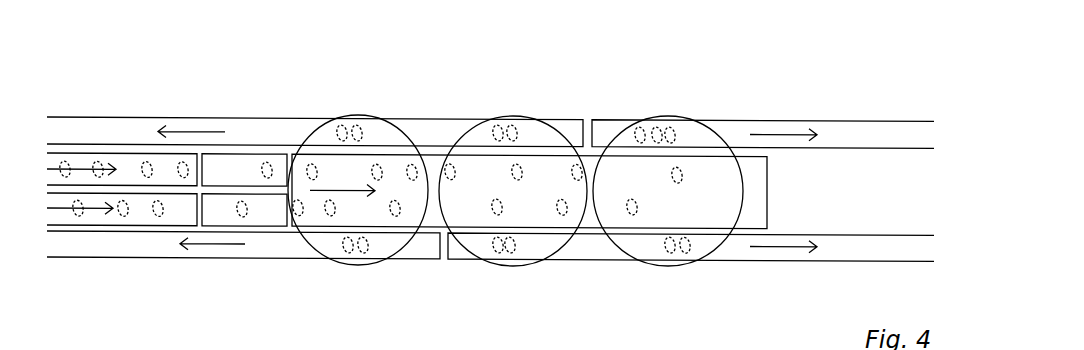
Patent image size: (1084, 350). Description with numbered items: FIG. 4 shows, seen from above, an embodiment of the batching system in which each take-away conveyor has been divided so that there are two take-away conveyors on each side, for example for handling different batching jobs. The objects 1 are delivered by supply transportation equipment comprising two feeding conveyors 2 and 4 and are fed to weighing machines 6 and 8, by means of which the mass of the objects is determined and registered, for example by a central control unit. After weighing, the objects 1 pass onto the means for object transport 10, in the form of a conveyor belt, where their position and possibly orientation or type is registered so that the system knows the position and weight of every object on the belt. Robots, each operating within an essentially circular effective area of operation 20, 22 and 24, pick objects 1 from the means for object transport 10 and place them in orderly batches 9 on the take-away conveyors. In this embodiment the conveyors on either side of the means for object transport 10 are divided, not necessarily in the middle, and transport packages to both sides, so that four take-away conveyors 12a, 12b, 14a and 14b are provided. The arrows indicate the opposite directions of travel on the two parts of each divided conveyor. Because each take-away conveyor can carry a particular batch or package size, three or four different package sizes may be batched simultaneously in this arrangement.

The objects 1 is at (150, 162).
The feeding conveyor 2 is at (115, 153).
The feeding conveyor 4 is at (120, 225).
The weighing machine 6 is at (230, 155).
The weighing machine 8 is at (215, 224).
The batches 9 is at (708, 252).
The means for object transport 10 is at (433, 155).
The take-away conveyor 12a is at (567, 122).
The take-away conveyor 12b is at (733, 123).
The take-away conveyor 14a is at (403, 260).
The take-away conveyor 14b is at (580, 260).
The effective area of operation 20 is at (352, 115).
The effective area of operation 22 is at (527, 117).
The third zone 24 is at (670, 117).